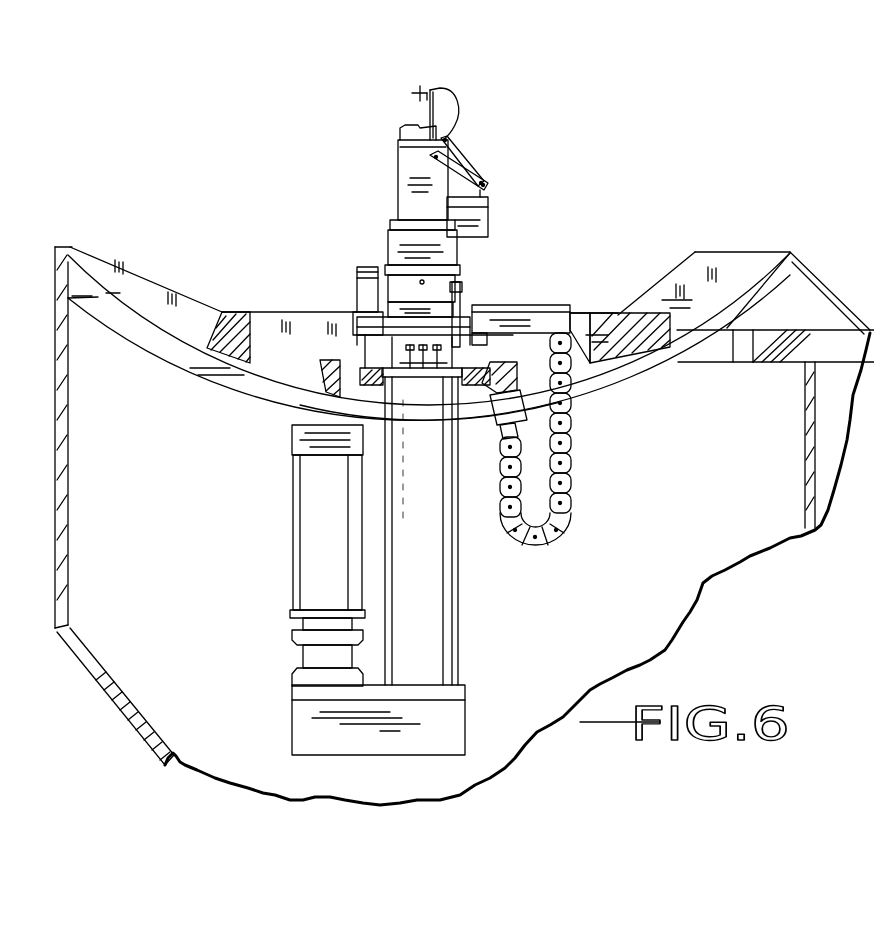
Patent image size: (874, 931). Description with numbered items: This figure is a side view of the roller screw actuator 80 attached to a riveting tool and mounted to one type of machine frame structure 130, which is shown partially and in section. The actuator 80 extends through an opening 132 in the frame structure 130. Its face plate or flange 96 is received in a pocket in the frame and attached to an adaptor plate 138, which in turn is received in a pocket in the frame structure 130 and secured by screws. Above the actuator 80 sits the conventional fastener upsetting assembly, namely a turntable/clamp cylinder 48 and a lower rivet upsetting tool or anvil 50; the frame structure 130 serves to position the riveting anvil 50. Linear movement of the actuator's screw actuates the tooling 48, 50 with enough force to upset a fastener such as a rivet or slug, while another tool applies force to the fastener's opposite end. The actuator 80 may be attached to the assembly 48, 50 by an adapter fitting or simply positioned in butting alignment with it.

The turntable/clamp cylinder 48 is at (386, 223).
The lower rivet upsetting tool or anvil 50 is at (452, 92).
The roller screw actuator 80 is at (462, 614).
The face plate or flange 96 is at (380, 364).
The frame structure 130 is at (705, 585).
The opening 132 is at (365, 392).
The adaptor plate 138 is at (478, 366).